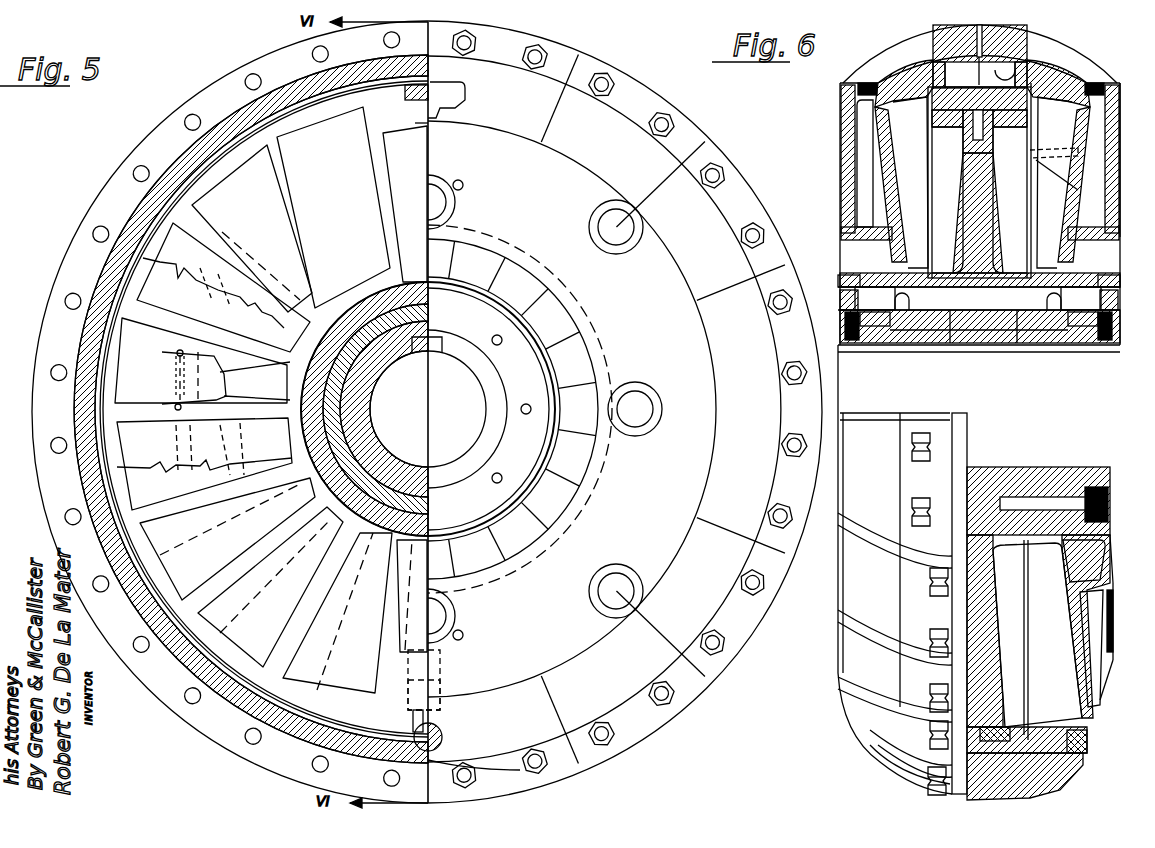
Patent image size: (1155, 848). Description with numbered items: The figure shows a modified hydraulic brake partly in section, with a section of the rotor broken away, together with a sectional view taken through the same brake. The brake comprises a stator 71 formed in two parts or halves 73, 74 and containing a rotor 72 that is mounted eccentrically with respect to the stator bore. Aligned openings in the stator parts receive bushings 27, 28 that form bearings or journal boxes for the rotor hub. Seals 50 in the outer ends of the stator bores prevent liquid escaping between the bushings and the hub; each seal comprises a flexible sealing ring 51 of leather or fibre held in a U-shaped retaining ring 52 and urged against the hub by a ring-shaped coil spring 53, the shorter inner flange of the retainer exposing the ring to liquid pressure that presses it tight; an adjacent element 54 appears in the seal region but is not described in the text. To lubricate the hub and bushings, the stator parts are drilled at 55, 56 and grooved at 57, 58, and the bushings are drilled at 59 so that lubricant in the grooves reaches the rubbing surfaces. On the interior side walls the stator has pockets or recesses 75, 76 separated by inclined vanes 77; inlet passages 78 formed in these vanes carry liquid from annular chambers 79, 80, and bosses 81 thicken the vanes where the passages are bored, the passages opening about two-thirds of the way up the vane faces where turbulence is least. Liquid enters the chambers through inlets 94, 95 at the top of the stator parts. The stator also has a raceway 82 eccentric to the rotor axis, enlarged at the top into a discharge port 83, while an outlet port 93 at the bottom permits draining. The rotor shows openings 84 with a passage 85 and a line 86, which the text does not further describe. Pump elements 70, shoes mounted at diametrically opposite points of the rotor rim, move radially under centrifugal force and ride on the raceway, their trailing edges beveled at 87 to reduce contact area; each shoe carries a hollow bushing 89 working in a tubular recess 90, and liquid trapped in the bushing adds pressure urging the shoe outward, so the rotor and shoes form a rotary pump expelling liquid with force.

In FIG. 6, the bushing 27 is at (950, 338).
In FIG. 6, the bushing 28 is at (1027, 330).
In FIG. 5, the seal 50 is at (532, 384).
In FIG. 6, the seal 50 is at (826, 316).
In FIG. 6, the sealing ring 51 is at (875, 330).
In FIG. 6, the retaining ring 52 is at (852, 342).
In FIG. 6, the coil spring 53 is at (842, 298).
In FIG. 6, the spring 54 is at (842, 278).
In FIG. 6, the drilled hole 55 is at (1090, 287).
In FIG. 6, the drilled hole 56 is at (868, 287).
In FIG. 6, the groove 57 is at (1054, 298).
In FIG. 6, the groove 58 is at (902, 298).
In FIG. 6, the bushing drilling 59 is at (905, 330).
In FIG. 5, the pump element 70 is at (422, 121).
In FIG. 6, the pump element 70 is at (1030, 86).
In FIG. 5, the stator 71 is at (218, 65).
In FIG. 6, the stator 71 is at (866, 53).
In FIG. 6, the rotor 72 is at (990, 291).
In FIG. 5, the stator part 73 is at (652, 298).
In FIG. 6, the stator part 73 is at (840, 95).
In FIG. 5, the stator part 74 is at (162, 128).
In FIG. 6, the stator part 74 is at (1110, 86).
In FIG. 6, the pocket 75 is at (917, 165).
In FIG. 5, the pocket 76 is at (172, 300).
In FIG. 6, the pocket 76 is at (1066, 129).
In FIG. 5, the vane 77 is at (236, 360).
In FIG. 5, the inlet passage 78 is at (182, 325).
In FIG. 6, the inlet passage 78 is at (1030, 170).
In FIG. 6, the annular chamber 79 is at (862, 192).
In FIG. 6, the annular chamber 80 is at (1098, 617).
In FIG. 5, the boss 81 is at (226, 318).
In FIG. 5, the raceway 82 is at (112, 323).
In FIG. 6, the discharge port 83 is at (1000, 80).
In FIG. 5, the vane opening 84 is at (352, 190).
In FIG. 6, the vane opening 84 is at (1024, 221).
In FIG. 6, the passage 85 is at (956, 221).
In FIG. 5, the vane bend line 86 is at (330, 241).
In FIG. 5, the beveled trailing edge 87 is at (417, 92).
In FIG. 5, the hollow bushing 89 is at (440, 690).
In FIG. 6, the hollow bushing 89 is at (966, 140).
In FIG. 5, the tubular recess 90 is at (440, 668).
In FIG. 6, the tubular recess 90 is at (970, 150).
In FIG. 5, the outlet port 93 is at (434, 752).
In FIG. 6, the outlet port 93 is at (1080, 752).
In FIG. 6, the inlet 94 is at (860, 83).
In FIG. 6, the inlet 95 is at (1098, 80).